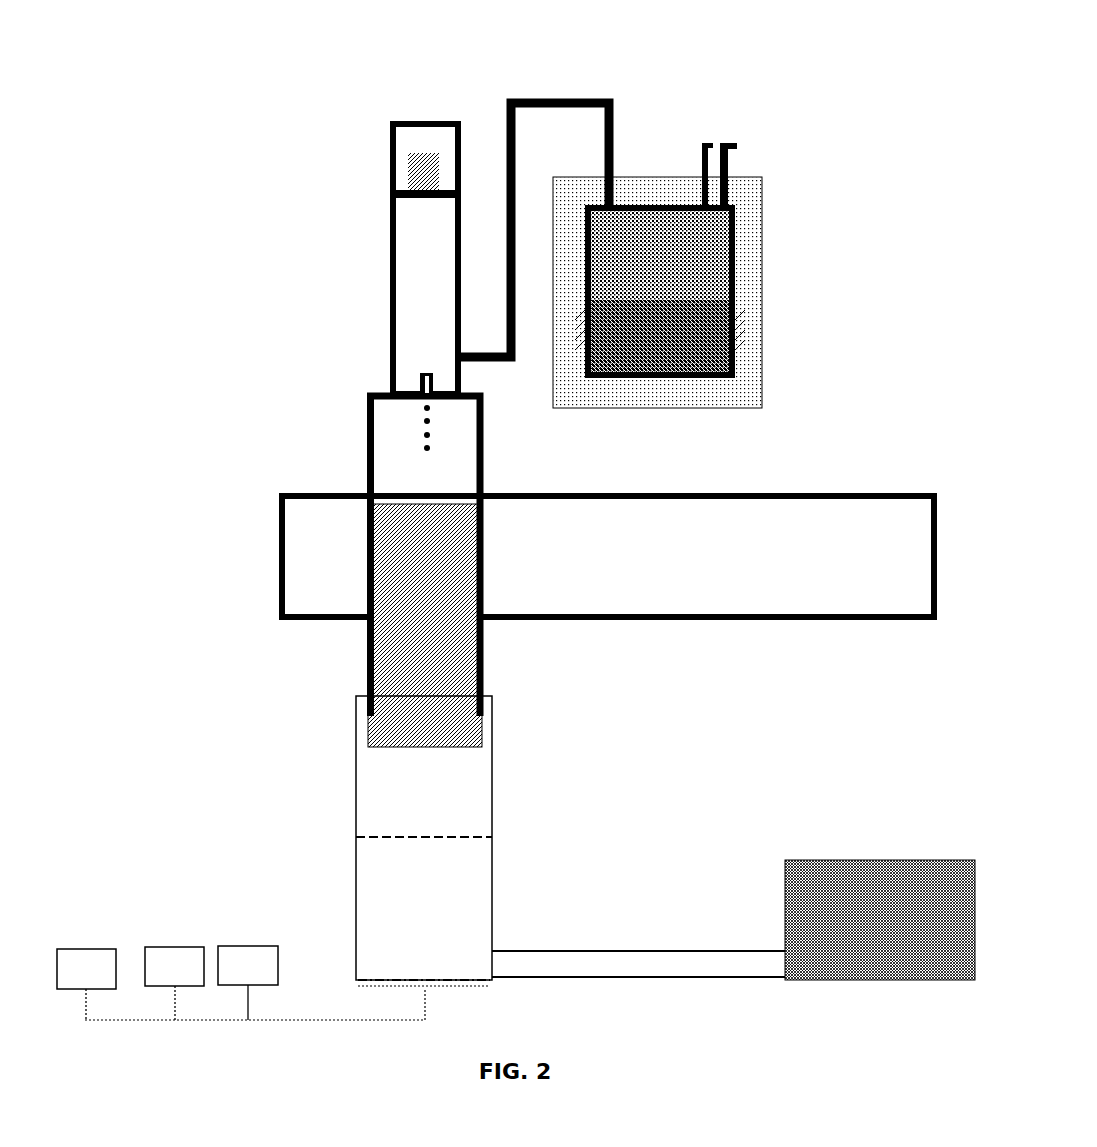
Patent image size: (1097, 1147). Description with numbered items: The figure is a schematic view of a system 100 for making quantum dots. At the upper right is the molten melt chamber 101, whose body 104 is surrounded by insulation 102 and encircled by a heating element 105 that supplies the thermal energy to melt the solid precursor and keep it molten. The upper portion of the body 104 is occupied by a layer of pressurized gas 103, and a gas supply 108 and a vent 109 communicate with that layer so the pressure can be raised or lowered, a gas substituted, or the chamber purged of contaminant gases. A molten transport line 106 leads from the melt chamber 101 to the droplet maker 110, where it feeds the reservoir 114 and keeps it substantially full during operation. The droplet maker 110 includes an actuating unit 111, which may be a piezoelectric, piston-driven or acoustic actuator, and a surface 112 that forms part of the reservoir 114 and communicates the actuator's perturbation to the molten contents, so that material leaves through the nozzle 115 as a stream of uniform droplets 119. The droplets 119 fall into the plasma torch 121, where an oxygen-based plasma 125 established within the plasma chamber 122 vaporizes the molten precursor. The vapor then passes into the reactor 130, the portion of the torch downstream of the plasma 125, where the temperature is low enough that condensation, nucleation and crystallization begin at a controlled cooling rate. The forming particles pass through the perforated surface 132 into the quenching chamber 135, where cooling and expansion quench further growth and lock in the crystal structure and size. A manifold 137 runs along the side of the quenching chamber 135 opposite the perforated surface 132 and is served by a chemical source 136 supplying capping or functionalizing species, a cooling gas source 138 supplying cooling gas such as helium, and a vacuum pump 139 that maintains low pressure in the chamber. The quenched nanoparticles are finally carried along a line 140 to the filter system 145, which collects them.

The system 100 is at (668, 73).
The molten melt chamber 101 is at (764, 177).
The insulation 102 is at (746, 340).
The layer of pressurized gas 103 is at (739, 233).
The body 104 is at (739, 315).
The heating element 105 is at (753, 361).
The molten transport line 106 is at (628, 127).
The gas supply 108 is at (708, 141).
The vent 109 is at (732, 147).
The droplet maker 110 is at (387, 122).
The actuating unit 111 is at (396, 180).
The surface 112 is at (387, 194).
The reservoir 114 is at (387, 292).
The nozzle 115 is at (416, 383).
The droplets 119 is at (414, 422).
The plasma torch 121 is at (247, 510).
The plasma chamber 122 is at (366, 456).
The plasma 125 is at (366, 646).
The reactor 130 is at (497, 789).
The perforated surface 132 is at (351, 839).
The quenching chamber 135 is at (498, 880).
The chemical source 136 is at (86, 984).
The manifold 137 is at (482, 989).
The cooling gas source 138 is at (174, 983).
The vacuum pump 139 is at (248, 983).
The line 140 is at (641, 937).
The filter system 145 is at (848, 849).